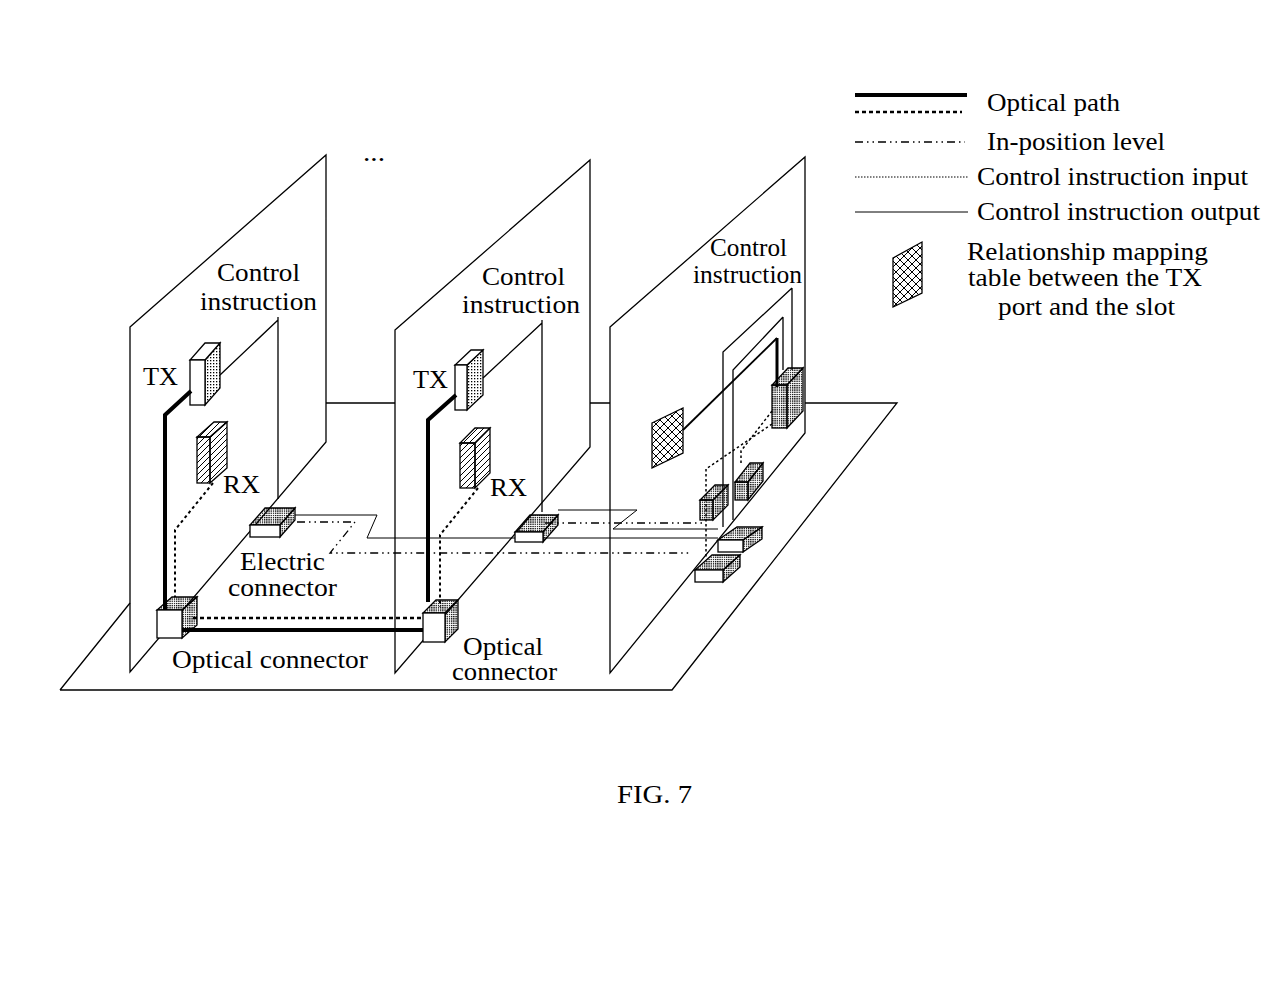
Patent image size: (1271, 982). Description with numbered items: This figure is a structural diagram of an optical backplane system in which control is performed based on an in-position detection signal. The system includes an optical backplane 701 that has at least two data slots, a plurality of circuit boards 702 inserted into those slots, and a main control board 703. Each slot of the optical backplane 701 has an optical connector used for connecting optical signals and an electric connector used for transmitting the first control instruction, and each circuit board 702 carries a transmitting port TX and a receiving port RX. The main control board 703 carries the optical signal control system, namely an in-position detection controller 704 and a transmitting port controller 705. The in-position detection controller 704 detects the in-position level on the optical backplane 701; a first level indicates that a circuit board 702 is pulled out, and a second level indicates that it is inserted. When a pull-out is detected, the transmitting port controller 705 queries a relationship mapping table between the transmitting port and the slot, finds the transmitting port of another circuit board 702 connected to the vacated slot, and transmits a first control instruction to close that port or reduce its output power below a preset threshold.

The optical backplane 701 is at (638, 693).
The circuit board 702 is at (582, 163).
The main control board 703 is at (790, 169).
The in-position detection controller 704 is at (765, 472).
The transmitting port controller 705 is at (805, 383).